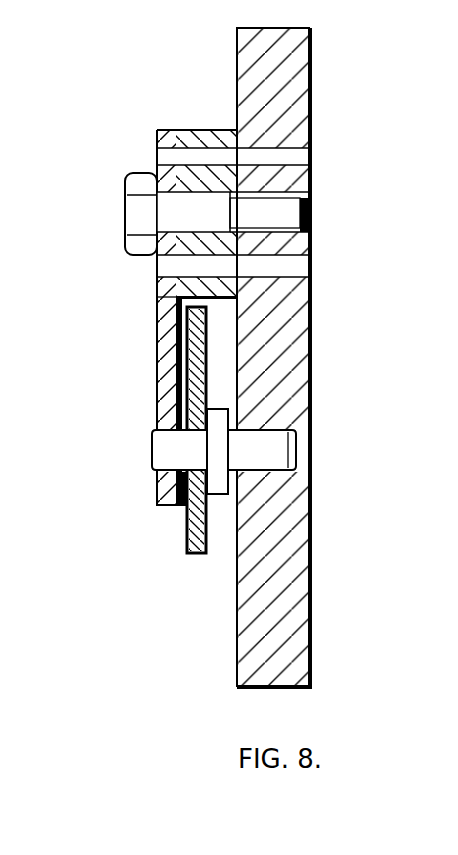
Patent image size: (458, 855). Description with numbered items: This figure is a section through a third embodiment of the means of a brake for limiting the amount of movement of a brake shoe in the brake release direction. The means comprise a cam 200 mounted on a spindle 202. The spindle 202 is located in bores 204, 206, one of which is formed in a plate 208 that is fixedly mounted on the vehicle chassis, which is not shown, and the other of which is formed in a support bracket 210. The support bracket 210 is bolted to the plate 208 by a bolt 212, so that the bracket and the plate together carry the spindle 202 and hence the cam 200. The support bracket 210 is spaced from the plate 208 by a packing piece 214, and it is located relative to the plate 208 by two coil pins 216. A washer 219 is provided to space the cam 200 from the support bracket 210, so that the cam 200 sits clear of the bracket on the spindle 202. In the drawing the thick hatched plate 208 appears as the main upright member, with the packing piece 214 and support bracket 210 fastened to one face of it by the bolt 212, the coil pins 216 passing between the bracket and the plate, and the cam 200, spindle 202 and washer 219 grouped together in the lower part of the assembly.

The cam 200 is at (207, 368).
The spindle 202 is at (217, 478).
The bore 204 is at (162, 424).
The bore 206 is at (300, 450).
The plate 208 is at (290, 312).
The support bracket 210 is at (165, 340).
The bolt 212 is at (147, 219).
The packing piece 214 is at (220, 137).
The coil pins 216 is at (290, 268).
The washer 219 is at (160, 490).